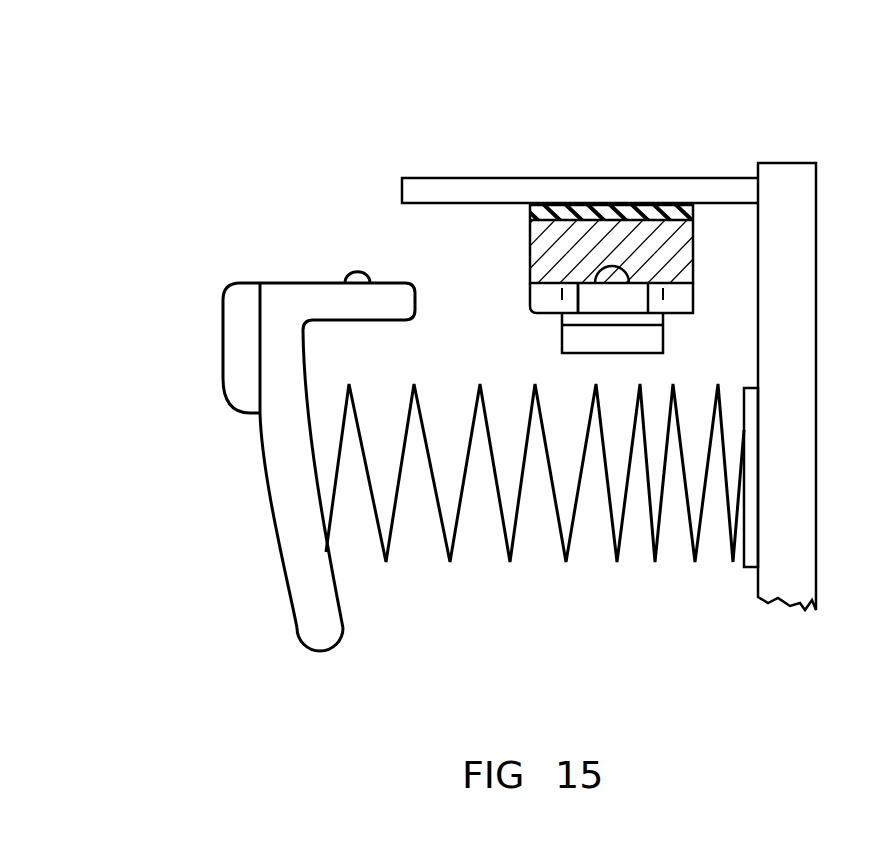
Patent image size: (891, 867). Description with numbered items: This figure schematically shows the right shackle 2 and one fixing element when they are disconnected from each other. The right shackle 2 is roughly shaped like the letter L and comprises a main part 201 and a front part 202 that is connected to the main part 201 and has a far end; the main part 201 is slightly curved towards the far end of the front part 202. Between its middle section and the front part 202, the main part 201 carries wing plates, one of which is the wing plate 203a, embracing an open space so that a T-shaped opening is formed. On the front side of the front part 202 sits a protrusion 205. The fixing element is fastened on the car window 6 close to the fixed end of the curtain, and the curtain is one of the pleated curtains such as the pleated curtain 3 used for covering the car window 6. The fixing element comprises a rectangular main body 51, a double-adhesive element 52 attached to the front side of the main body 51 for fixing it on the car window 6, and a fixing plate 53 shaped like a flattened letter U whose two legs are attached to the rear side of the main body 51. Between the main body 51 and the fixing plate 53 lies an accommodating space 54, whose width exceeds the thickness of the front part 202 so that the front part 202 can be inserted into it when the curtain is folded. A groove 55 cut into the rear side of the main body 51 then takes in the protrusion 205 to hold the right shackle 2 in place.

The right shackle 2 is at (240, 540).
The front part 202 is at (277, 283).
The protrusion 205 is at (357, 285).
The wing plate 203a is at (238, 378).
The main part 201 is at (297, 585).
The pleated curtain 3 is at (500, 530).
The car window 6 is at (579, 187).
The main body 51 is at (543, 252).
The double-adhesive element 52 is at (640, 210).
The groove 55 is at (612, 275).
The accommodating space 54 is at (643, 305).
The fixing plate 53 is at (643, 340).